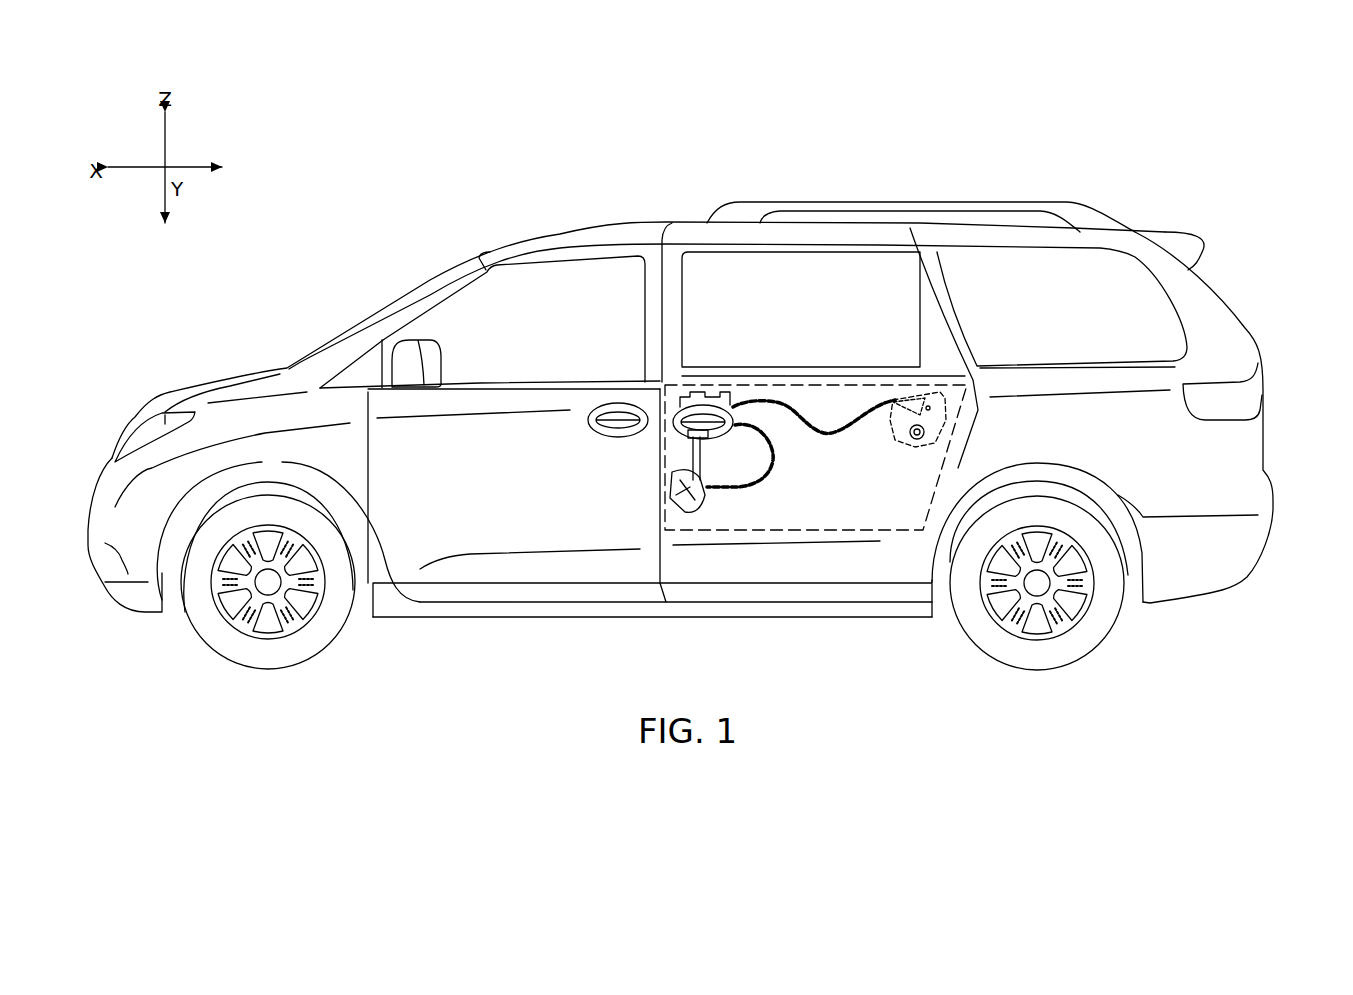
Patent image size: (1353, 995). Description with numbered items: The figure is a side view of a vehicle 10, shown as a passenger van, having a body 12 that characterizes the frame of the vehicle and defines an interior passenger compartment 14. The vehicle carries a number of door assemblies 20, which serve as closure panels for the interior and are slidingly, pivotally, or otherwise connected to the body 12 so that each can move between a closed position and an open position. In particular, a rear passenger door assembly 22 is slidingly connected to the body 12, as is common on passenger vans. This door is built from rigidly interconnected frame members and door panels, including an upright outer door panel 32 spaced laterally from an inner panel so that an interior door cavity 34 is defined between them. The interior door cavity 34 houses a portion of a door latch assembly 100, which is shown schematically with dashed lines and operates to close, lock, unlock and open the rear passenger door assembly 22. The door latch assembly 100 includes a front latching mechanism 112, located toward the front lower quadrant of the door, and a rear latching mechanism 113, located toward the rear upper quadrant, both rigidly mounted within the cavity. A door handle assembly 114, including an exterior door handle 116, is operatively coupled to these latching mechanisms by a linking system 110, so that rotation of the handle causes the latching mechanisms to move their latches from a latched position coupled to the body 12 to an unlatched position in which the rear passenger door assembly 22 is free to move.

The vehicle 10 is at (945, 165).
The body 12 is at (1264, 432).
The interior passenger compartment 14 is at (545, 293).
The door assemblies 20 is at (412, 608).
The rear passenger door assembly 22 is at (880, 617).
The outer door panel 32 is at (693, 577).
The interior door cavity 34 is at (665, 530).
The door latch assembly 100 is at (657, 382).
The linking system 110 is at (778, 475).
The front latching mechanism 112 is at (662, 500).
The rear latching mechanism 113 is at (950, 405).
The door handle assembly 114 is at (710, 382).
The exterior door handle 116 is at (677, 422).